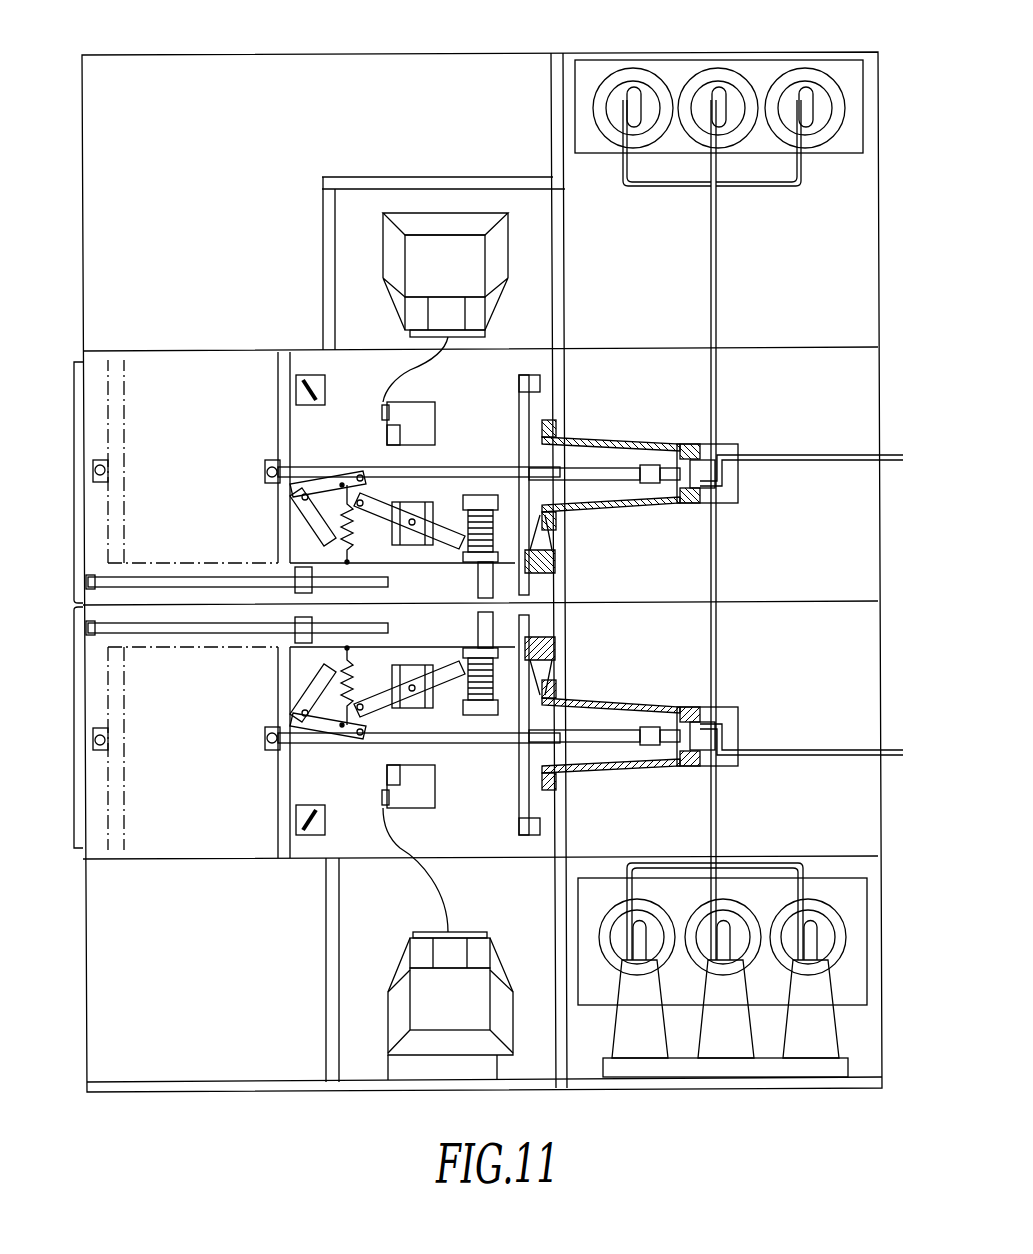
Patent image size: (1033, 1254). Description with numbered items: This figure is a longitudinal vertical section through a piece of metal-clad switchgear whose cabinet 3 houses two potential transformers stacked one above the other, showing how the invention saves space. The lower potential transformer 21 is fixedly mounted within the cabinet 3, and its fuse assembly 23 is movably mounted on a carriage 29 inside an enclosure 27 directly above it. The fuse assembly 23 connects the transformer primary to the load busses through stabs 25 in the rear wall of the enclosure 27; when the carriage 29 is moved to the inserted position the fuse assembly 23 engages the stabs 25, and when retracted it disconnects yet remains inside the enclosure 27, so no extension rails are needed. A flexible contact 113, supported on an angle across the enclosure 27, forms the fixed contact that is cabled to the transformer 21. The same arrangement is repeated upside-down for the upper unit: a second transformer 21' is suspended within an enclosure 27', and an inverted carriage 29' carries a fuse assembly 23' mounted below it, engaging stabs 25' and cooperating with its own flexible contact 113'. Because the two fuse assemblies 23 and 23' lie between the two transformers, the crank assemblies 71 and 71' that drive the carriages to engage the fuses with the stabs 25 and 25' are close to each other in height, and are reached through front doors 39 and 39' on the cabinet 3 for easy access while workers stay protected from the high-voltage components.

The cabinet 3 is at (186, 53).
The potential transformer 21 is at (399, 944).
The potential transformer 21' is at (445, 271).
The fuse assembly 23 is at (590, 725).
The fuse assembly 23' is at (585, 485).
The stabs 25 is at (790, 712).
The stabs 25' is at (790, 493).
The enclosure 27 is at (177, 752).
The enclosure 27' is at (177, 457).
The carriage 29 is at (389, 681).
The carriage 29' is at (387, 529).
The door 39 is at (154, 728).
The door 39' is at (154, 481).
The crank assembly 71 is at (209, 647).
The crank assembly 71' is at (209, 565).
The flexible contact 113 is at (431, 806).
The flexible contact 113' is at (439, 410).